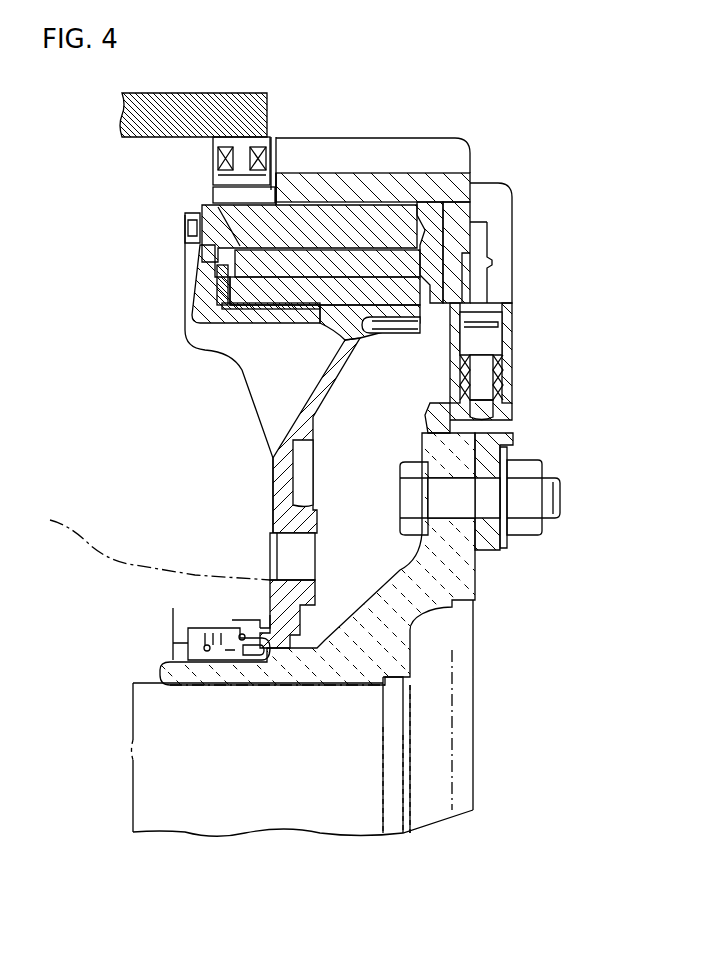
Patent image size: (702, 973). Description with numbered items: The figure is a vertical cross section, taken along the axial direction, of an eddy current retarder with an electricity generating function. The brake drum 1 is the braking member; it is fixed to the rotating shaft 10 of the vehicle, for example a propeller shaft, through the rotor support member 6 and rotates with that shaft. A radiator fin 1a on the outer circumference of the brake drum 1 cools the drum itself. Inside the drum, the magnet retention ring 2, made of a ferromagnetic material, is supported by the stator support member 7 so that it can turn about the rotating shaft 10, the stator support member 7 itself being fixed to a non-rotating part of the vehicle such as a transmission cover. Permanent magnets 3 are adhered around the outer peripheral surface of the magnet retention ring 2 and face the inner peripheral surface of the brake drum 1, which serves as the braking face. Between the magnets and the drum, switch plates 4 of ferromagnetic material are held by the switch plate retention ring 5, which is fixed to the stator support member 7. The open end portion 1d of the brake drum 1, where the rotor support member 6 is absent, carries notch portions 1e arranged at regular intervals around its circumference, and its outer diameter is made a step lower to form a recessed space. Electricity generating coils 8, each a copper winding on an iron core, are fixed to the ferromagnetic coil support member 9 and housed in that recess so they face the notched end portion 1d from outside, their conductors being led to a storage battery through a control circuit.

The brake drum 1 is at (445, 185).
The radiator fin 1a is at (405, 137).
The end portion 1d is at (277, 140).
The notch portion 1e is at (220, 197).
The magnet retention ring 2 is at (257, 297).
The permanent magnet 3 is at (250, 262).
The switch plate 4 is at (398, 228).
The switch plate retention ring 5 is at (435, 243).
The rotor support member 6 is at (475, 277).
The stator support member 7 is at (270, 463).
The electricity generating coil 8 is at (213, 158).
The coil support member 9 is at (121, 135).
The rotating shaft 10 is at (190, 808).